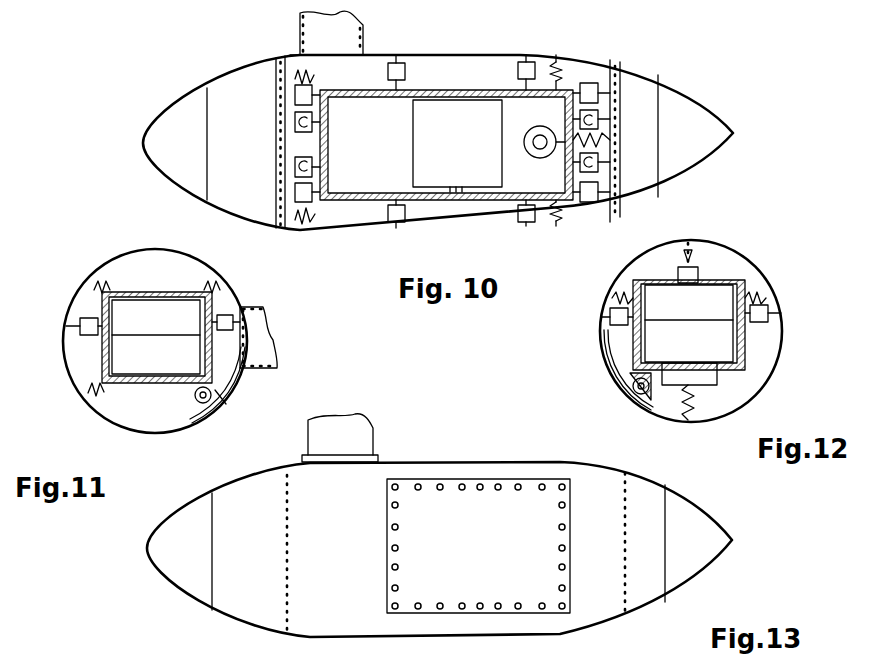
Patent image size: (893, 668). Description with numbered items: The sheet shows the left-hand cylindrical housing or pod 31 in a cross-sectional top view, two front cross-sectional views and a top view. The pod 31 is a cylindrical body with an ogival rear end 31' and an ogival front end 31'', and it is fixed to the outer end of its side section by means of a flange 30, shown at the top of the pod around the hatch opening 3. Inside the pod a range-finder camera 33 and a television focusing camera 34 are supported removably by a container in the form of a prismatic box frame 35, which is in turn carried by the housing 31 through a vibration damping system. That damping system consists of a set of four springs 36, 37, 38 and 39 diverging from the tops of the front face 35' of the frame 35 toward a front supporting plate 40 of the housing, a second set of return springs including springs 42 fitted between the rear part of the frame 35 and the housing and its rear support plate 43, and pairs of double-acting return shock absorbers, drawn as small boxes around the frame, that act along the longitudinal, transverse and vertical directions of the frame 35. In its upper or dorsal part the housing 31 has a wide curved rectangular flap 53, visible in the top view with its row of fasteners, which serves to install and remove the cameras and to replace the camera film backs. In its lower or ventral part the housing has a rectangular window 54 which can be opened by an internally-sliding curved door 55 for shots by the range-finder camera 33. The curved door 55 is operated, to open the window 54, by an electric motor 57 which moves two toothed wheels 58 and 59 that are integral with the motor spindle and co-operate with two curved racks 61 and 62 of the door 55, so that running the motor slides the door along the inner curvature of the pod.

In FIG. 10, the hatch opening 3 is at (300, 32).
In FIG. 11, the hatch opening 3 is at (258, 308).
In FIG. 13, the hatch opening 3 is at (362, 443).
In FIG. 10, the flange 30 is at (294, 56).
In FIG. 11, the flange 30 is at (238, 306).
In FIG. 13, the flange 30 is at (302, 456).
In FIG. 10, the cylindrical housing or pod 31 is at (438, 127).
In FIG. 11, the cylindrical housing or pod 31 is at (138, 341).
In FIG. 12, the cylindrical housing or pod 31 is at (702, 331).
In FIG. 13, the cylindrical housing or pod 31 is at (439, 530).
In FIG. 10, the ogival rear end 31' is at (703, 131).
In FIG. 13, the ogival rear end 31' is at (708, 535).
In FIG. 10, the ogival front end 31'' is at (159, 144).
In FIG. 13, the ogival front end 31'' is at (166, 551).
In FIG. 10, the range-finder camera 33 is at (452, 126).
In FIG. 11, the range-finder camera 33 is at (153, 322).
In FIG. 12, the range-finder camera 33 is at (700, 377).
In FIG. 10, the television focusing camera 34 is at (541, 141).
In FIG. 12, the television focusing camera 34 is at (698, 275).
In FIG. 11, the prismatic box frame 35 is at (157, 353).
In FIG. 12, the prismatic box frame 35 is at (704, 325).
In FIG. 10, the front face of frame 35' is at (348, 153).
In FIG. 11, the front face of frame 35' is at (204, 261).
In FIG. 11, the spring 36 is at (97, 390).
In FIG. 10, the spring 37 is at (307, 222).
In FIG. 11, the spring 37 is at (106, 284).
In FIG. 10, the spring 38 is at (316, 76).
In FIG. 11, the spring 38 is at (214, 285).
In FIG. 11, the spring 39 is at (226, 377).
In FIG. 10, the front supporting plate 40 is at (274, 143).
In FIG. 10, the return spring 42 is at (606, 140).
In FIG. 10, the rear support plate 43 is at (618, 68).
In FIG. 11, the curved rectangular flap 53 is at (170, 258).
In FIG. 12, the curved rectangular flap 53 is at (742, 252).
In FIG. 13, the curved rectangular flap 53 is at (407, 555).
In FIG. 11, the rectangular window 54 is at (127, 436).
In FIG. 12, the rectangular window 54 is at (697, 427).
In FIG. 11, the curved door 55 is at (162, 434).
In FIG. 12, the curved door 55 is at (662, 422).
In FIG. 11, the electric motor 57 is at (212, 399).
In FIG. 11, the toothed wheel 58 is at (208, 412).
In FIG. 12, the toothed wheel 59 is at (630, 384).
In FIG. 11, the curved rack 61 is at (212, 420).
In FIG. 12, the curved rack 62 is at (610, 372).